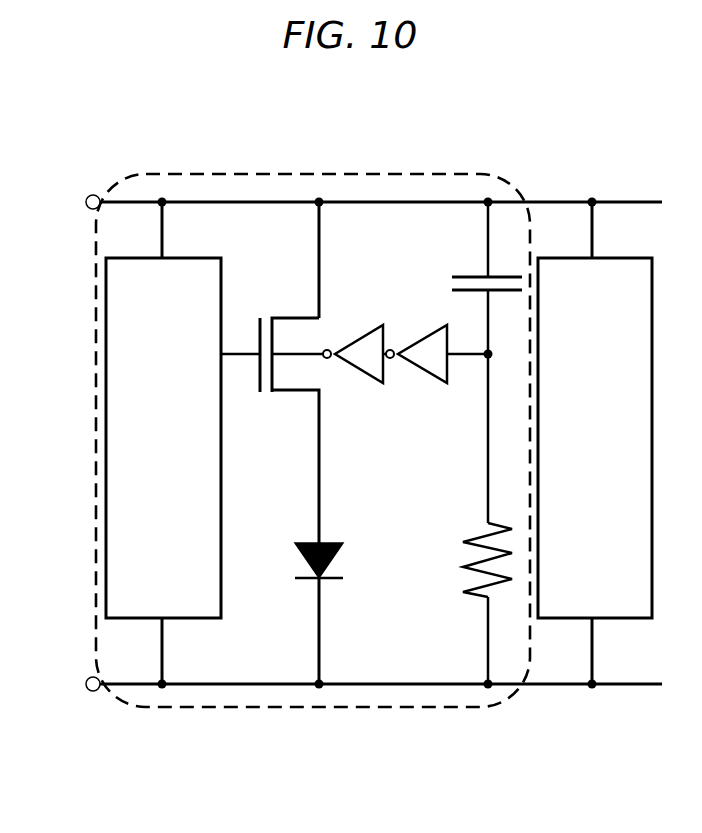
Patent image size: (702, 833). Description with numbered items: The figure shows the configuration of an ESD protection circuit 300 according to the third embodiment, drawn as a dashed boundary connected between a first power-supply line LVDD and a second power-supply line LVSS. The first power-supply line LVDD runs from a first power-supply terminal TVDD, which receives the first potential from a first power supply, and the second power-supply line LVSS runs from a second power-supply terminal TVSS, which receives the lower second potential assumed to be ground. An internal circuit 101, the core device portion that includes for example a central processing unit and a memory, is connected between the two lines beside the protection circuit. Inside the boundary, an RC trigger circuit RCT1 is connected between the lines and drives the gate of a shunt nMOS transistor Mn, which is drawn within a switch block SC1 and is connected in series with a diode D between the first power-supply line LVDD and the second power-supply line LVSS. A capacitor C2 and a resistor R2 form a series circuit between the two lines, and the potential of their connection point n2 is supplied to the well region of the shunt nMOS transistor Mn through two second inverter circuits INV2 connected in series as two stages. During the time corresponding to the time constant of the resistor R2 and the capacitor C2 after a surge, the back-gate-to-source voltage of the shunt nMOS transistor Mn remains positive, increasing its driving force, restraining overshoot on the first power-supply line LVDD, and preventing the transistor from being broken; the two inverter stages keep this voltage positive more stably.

The ESD protection circuit 300 is at (212, 175).
The internal circuit 101 is at (578, 619).
The RC trigger circuit RCT1 is at (221, 265).
The switch circuit SC1 is at (272, 371).
The shunt nMOS transistor Mn is at (272, 371).
The diode D is at (302, 613).
The second inverter circuit INV2 is at (405, 369).
The capacitor C2 is at (464, 276).
The resistor R2 is at (468, 521).
The connection point n2 is at (500, 343).
The first power-supply terminal TVDD is at (96, 193).
The second power-supply terminal TVSS is at (94, 691).
The first power-supply line LVDD is at (363, 202).
The second power-supply line LVSS is at (365, 685).